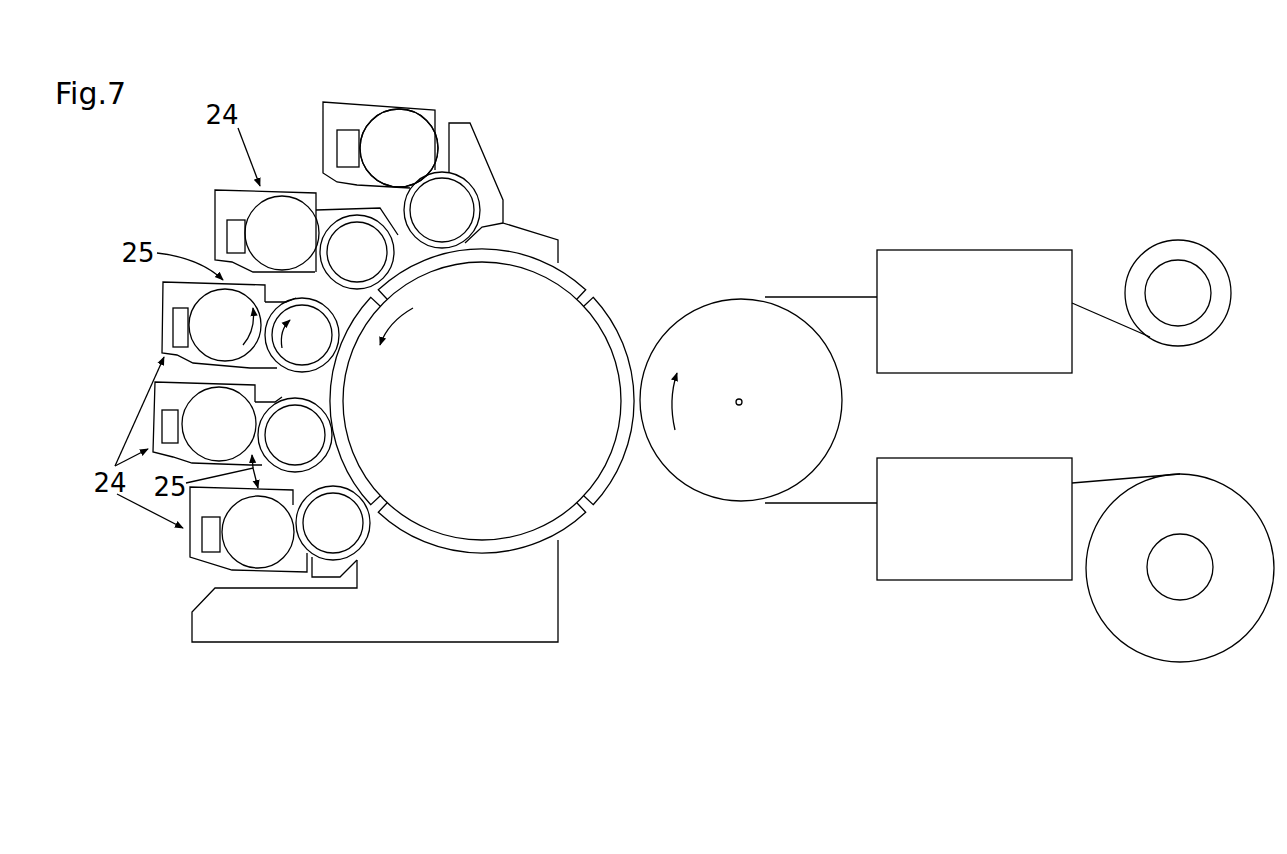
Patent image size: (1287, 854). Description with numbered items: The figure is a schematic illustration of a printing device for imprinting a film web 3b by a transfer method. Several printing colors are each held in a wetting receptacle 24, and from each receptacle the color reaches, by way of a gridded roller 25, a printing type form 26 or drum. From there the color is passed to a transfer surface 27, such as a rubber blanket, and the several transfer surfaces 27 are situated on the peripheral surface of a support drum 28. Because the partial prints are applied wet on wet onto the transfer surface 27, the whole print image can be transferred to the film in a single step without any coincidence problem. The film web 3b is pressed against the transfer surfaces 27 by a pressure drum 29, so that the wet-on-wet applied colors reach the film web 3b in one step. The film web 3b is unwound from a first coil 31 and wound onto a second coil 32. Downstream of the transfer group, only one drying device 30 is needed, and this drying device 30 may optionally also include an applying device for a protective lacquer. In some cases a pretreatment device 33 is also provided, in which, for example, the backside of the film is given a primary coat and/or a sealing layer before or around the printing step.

The wetting receptacle 24 is at (418, 100).
The gridded roller 25 is at (288, 190).
The printing type form 26 is at (452, 254).
The transfer surface 27 is at (433, 525).
The support drum 28 is at (538, 446).
The pressure drum 29 is at (726, 459).
The film web 3b is at (812, 293).
The drying device 30 is at (958, 331).
The pretreatment device 33 is at (958, 541).
The first coil 31 is at (1168, 602).
The second coil 32 is at (1200, 323).